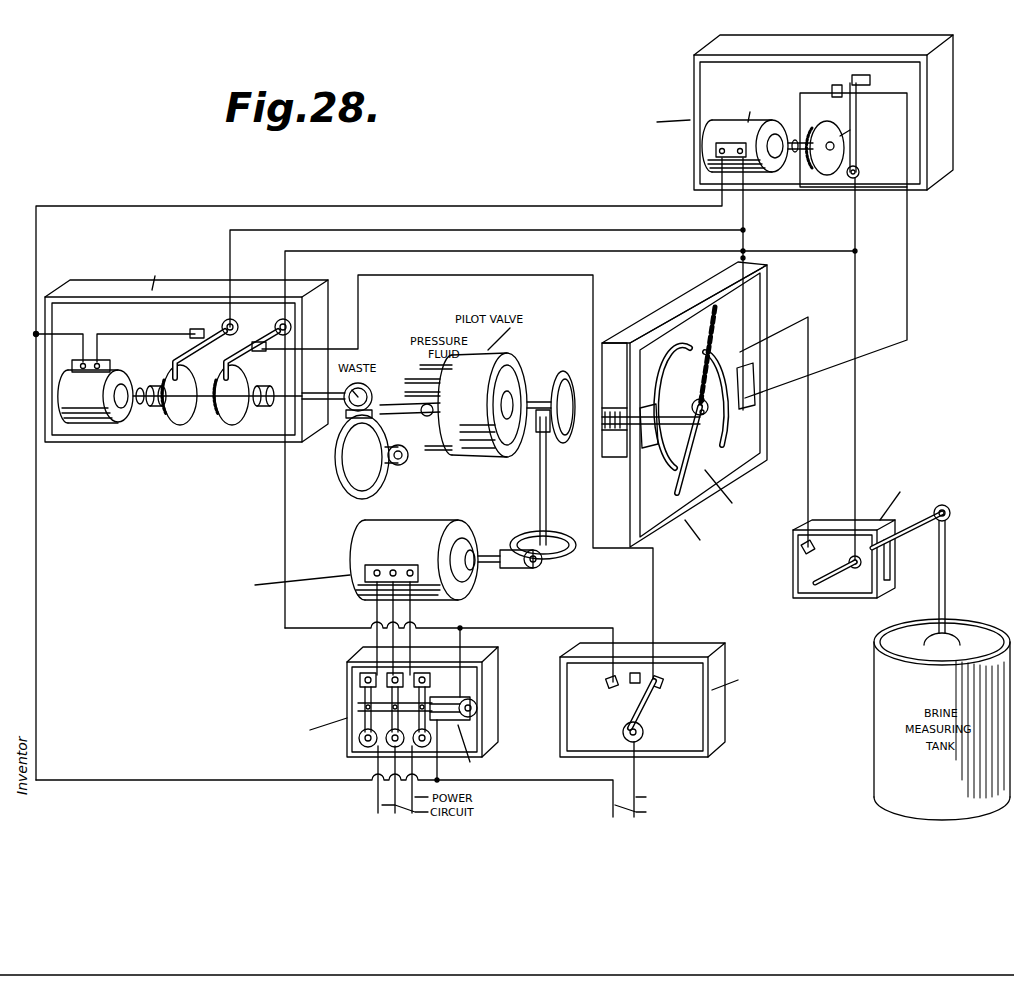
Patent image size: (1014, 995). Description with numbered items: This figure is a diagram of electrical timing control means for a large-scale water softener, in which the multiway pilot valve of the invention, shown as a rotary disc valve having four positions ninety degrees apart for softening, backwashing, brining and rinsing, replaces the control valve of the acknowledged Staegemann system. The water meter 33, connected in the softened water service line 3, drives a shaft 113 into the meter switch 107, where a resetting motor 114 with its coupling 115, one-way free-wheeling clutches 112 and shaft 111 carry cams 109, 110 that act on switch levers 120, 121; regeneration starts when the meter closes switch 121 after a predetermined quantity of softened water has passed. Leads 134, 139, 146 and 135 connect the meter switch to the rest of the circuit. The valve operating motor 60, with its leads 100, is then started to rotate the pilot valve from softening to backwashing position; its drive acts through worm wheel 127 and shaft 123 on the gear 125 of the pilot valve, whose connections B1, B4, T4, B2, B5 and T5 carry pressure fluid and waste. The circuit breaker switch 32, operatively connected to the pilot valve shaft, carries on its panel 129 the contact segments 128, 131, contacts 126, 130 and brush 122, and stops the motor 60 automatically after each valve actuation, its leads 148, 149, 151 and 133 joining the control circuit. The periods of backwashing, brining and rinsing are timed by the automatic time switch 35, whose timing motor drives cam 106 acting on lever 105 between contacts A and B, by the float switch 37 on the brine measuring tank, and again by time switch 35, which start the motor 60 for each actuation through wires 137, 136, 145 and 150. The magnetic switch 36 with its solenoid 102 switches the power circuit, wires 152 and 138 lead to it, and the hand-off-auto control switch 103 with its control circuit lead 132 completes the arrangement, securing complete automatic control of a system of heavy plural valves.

The automatic time switch 35 is at (694, 146).
The lever of automatic switch 105 is at (856, 110).
The cam of automatic switch 106 is at (832, 152).
The contact A is at (868, 74).
The contact B is at (834, 86).
The wire 137 is at (578, 206).
The wire 138 is at (222, 775).
The wire 136 is at (745, 203).
The wire 146 is at (800, 220).
The wire 139 is at (229, 244).
The wire 145 is at (830, 190).
The wire 150 is at (856, 308).
The wire 135 is at (745, 242).
The wire 152 is at (535, 622).
The wire 148 is at (634, 251).
The wire 151 is at (908, 272).
The wire 149 is at (808, 478).
The wire 133 is at (514, 276).
The wire 134 is at (60, 328).
The meter switch 107 is at (82, 290).
The motor for resetting meter switch 114 is at (75, 395).
The motor shaft coupling 115 is at (138, 406).
The one way drive (free wheeling) clutches 112 is at (268, 412).
The cam disc 109 is at (170, 378).
The cam disc 110 is at (238, 388).
The shaft 111 is at (200, 405).
The switch lever 120 is at (218, 325).
The switch 121 is at (262, 330).
The shaft from water meter 113 is at (314, 391).
The water meter 33 is at (340, 478).
The line 3 is at (402, 460).
The pipe B5 is at (357, 439).
The pipe T5 is at (385, 445).
The pipe B1 is at (425, 362).
The pipe B4 is at (418, 379).
The pipe T4 is at (408, 392).
The pipe B2 is at (432, 451).
The pilot valve gear 125 is at (583, 352).
The vertical shaft 123 is at (563, 443).
The worm wheel 127 is at (598, 488).
The valve operating motor 60 is at (370, 540).
The motor leads 100 is at (370, 615).
The magnetic switch 36 is at (347, 745).
The solenoid 102 is at (478, 706).
The control switch 103 is at (695, 722).
The control circuit wire 132 is at (612, 798).
The circuit breaker switch 32 is at (758, 305).
The circuit breaker panel 129 is at (757, 324).
The contact segment 128 is at (672, 378).
The contact segment 131 is at (724, 440).
The brush 122 is at (690, 490).
The contact 126 is at (650, 452).
The contact 130 is at (754, 382).
The float switch 37 is at (832, 600).